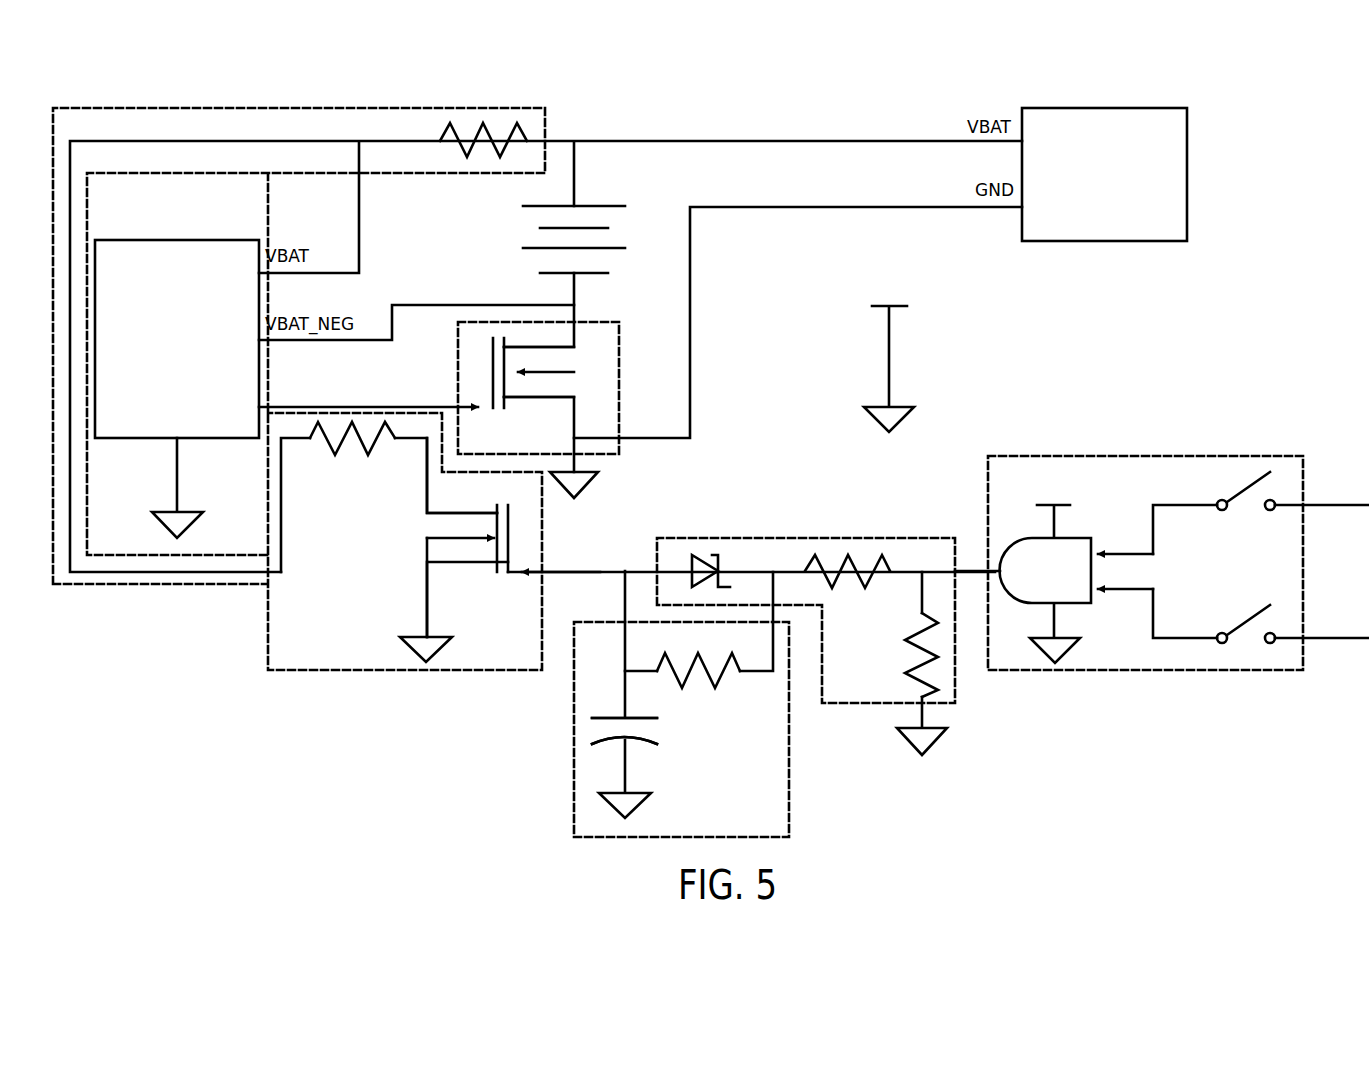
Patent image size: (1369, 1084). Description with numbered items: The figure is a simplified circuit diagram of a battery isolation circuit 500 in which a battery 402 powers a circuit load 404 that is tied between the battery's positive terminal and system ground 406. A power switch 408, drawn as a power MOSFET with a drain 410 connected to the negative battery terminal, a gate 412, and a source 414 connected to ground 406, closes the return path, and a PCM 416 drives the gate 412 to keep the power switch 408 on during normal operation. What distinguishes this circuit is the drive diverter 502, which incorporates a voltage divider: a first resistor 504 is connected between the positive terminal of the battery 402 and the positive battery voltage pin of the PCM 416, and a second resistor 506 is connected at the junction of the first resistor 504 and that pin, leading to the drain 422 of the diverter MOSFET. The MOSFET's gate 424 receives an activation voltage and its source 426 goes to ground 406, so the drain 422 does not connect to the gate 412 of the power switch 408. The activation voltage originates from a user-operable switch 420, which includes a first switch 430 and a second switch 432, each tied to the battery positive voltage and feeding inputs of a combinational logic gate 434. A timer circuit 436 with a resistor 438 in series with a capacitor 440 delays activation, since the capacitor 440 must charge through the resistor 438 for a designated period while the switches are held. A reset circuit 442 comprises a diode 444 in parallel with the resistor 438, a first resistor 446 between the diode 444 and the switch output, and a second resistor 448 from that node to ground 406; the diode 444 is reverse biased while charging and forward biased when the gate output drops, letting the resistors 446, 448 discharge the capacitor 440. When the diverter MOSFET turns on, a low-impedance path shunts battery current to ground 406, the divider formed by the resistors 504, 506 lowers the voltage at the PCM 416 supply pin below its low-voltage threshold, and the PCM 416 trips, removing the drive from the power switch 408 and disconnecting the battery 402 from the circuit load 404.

The battery isolation circuit 500 is at (1290, 130).
The drive diverter 502 is at (268, 640).
The first resistor 504 is at (455, 143).
The second resistor 506 is at (322, 440).
The battery 402 is at (608, 205).
The circuit load 404 is at (1104, 174).
The system ground 406 is at (889, 358).
The power switch 408 is at (596, 323).
The drain 410 is at (577, 337).
The gate 412 is at (492, 372).
The source 414 is at (577, 415).
The PCM 416 is at (177, 339).
The user-operable switch 420 is at (1220, 455).
The drain 422 is at (425, 496).
The gate 424 is at (511, 532).
The source 426 is at (427, 592).
The first switch 430 is at (1250, 484).
The second switch 432 is at (1250, 618).
The combinational logic gate 434 is at (1075, 535).
The timer circuit 436 is at (574, 813).
The resistor 438 is at (725, 673).
The capacitor 440 is at (635, 740).
The reset circuit 442 is at (870, 538).
The diode 444 is at (700, 556).
The first resistor 446 is at (853, 576).
The second resistor 448 is at (920, 656).